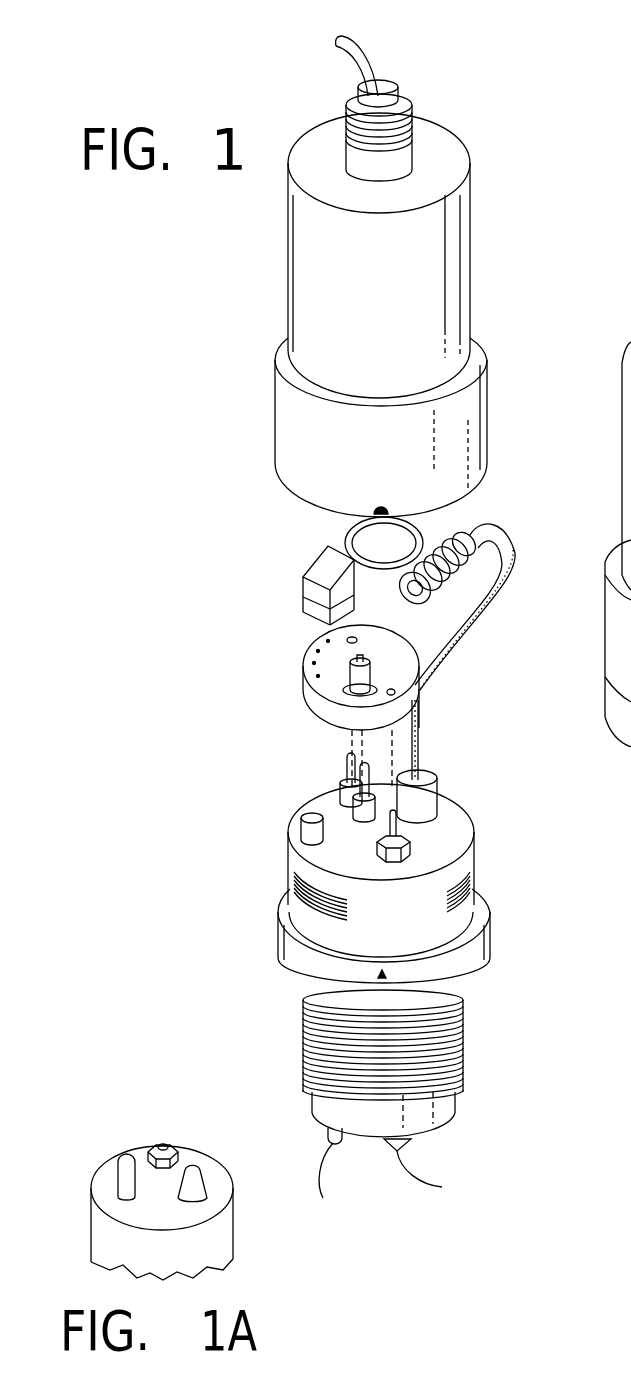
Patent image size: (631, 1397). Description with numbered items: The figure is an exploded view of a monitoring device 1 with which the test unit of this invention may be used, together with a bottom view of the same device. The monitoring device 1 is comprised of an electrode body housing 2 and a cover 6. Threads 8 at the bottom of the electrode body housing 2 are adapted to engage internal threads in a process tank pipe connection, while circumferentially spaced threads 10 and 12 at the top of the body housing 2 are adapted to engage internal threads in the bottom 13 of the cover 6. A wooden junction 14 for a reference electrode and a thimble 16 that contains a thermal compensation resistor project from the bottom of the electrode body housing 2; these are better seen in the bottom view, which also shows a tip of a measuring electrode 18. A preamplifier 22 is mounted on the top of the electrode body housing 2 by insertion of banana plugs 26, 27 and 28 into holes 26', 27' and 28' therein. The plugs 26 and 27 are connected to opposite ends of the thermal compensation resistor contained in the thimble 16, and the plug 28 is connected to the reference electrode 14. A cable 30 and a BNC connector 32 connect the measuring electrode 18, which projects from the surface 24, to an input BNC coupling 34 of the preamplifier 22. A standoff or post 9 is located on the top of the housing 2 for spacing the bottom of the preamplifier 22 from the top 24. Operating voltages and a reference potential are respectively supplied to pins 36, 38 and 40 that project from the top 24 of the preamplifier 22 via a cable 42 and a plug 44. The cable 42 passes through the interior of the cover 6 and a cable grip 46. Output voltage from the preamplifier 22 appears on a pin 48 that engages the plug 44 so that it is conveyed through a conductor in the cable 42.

In FIG. 1, the monitoring device 1 is at (258, 412).
In FIG. 1, the electrode body housing 2 is at (493, 930).
In FIG. 1, the cover 6 is at (468, 230).
In FIG. 1, the threads 8 is at (462, 1022).
In FIG. 1, the standoff or post 9 is at (305, 827).
In FIG. 1, the circumferentially spaced threads 10 is at (297, 867).
In FIG. 1, the circumferentially spaced threads 12 is at (476, 862).
In FIG. 1, the bottom of the cover 13 is at (487, 387).
In FIG. 1, the wooden junction 14 is at (428, 1169).
In FIG. 1A, the wooden junction 14 is at (160, 1143).
In FIG. 1, the thimble 16 is at (337, 1172).
In FIG. 1A, the thimble 16 is at (118, 1167).
In FIG. 1, the measuring electrode 18 is at (437, 770).
In FIG. 1A, the measuring electrode 18 is at (200, 1163).
In FIG. 1, the preamplifier 22 is at (315, 698).
In FIG. 1, the top 24 is at (423, 687).
In FIG. 1, the banana plug 26 is at (282, 779).
In FIG. 1, the banana plug 27 is at (314, 772).
In FIG. 1, the banana plug 28 is at (460, 808).
In FIG. 1, the hole 26' is at (368, 613).
In FIG. 1, the hole 27' is at (386, 653).
In FIG. 1, the hole 28' is at (405, 665).
In FIG. 1, the cable 30 is at (515, 552).
In FIG. 1, the BNC connector 32 is at (477, 550).
In FIG. 1, the input BNC coupling 34 is at (352, 682).
In FIG. 1, the pin 36 is at (245, 586).
In FIG. 1, the pin 38 is at (258, 596).
In FIG. 1, the pin 40 is at (275, 602).
In FIG. 1, the cable 42 is at (360, 43).
In FIG. 1, the plug 44 is at (310, 555).
In FIG. 1, the cable grip 46 is at (393, 80).
In FIG. 1, the pin 48 is at (297, 605).